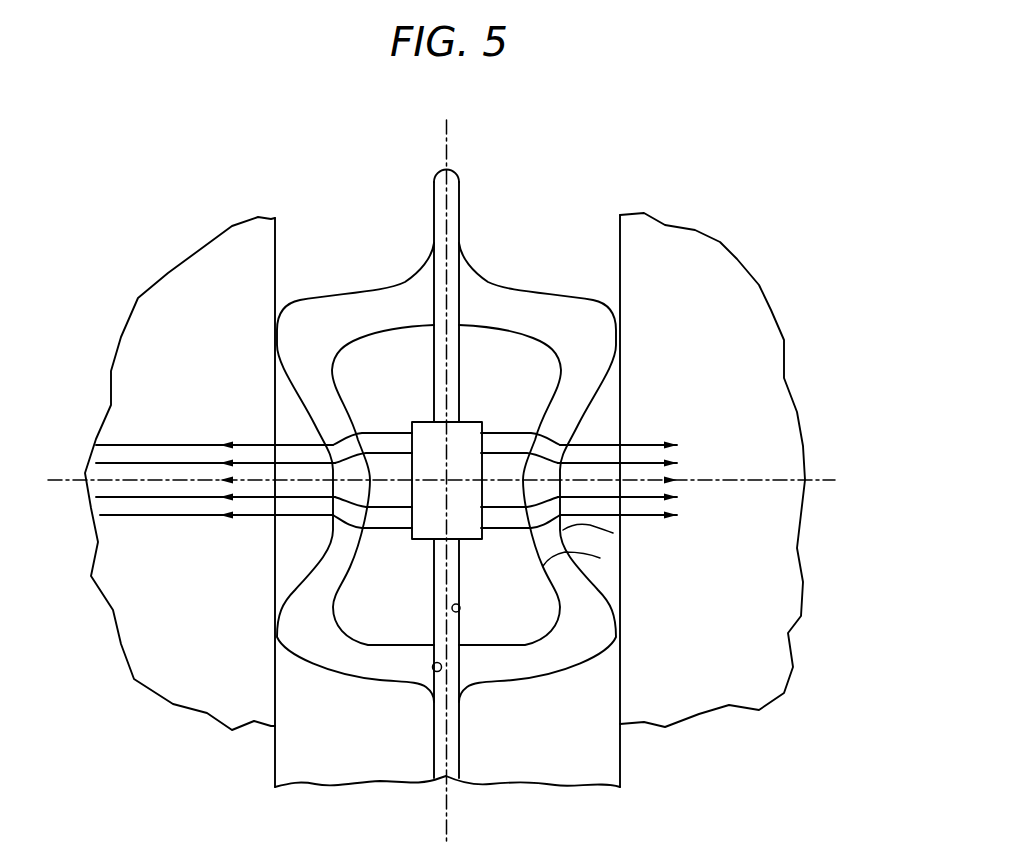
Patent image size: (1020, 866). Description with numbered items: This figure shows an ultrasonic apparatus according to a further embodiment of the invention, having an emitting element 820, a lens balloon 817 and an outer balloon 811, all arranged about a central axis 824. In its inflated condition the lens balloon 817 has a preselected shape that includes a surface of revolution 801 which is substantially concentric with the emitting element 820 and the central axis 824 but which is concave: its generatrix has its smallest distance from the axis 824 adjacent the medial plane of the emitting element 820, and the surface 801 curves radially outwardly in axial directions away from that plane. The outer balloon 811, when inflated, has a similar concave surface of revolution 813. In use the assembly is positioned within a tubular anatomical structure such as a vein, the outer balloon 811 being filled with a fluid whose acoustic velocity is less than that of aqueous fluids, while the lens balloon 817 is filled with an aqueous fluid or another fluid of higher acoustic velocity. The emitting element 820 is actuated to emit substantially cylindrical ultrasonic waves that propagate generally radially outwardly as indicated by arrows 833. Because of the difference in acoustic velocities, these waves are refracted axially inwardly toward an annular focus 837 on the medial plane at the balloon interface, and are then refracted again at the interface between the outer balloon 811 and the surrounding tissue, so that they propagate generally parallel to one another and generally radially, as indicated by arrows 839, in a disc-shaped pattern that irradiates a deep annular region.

The surface of revolution 801 is at (600, 558).
The outer balloon 811 is at (604, 290).
The concave surface of revolution 813 is at (613, 533).
The lens balloon 817 is at (574, 348).
The emitting element 820 is at (482, 421).
The central axis 824 is at (457, 748).
The arrows 833 is at (517, 430).
The annular focus 837 is at (640, 464).
The arrows 839 is at (180, 463).